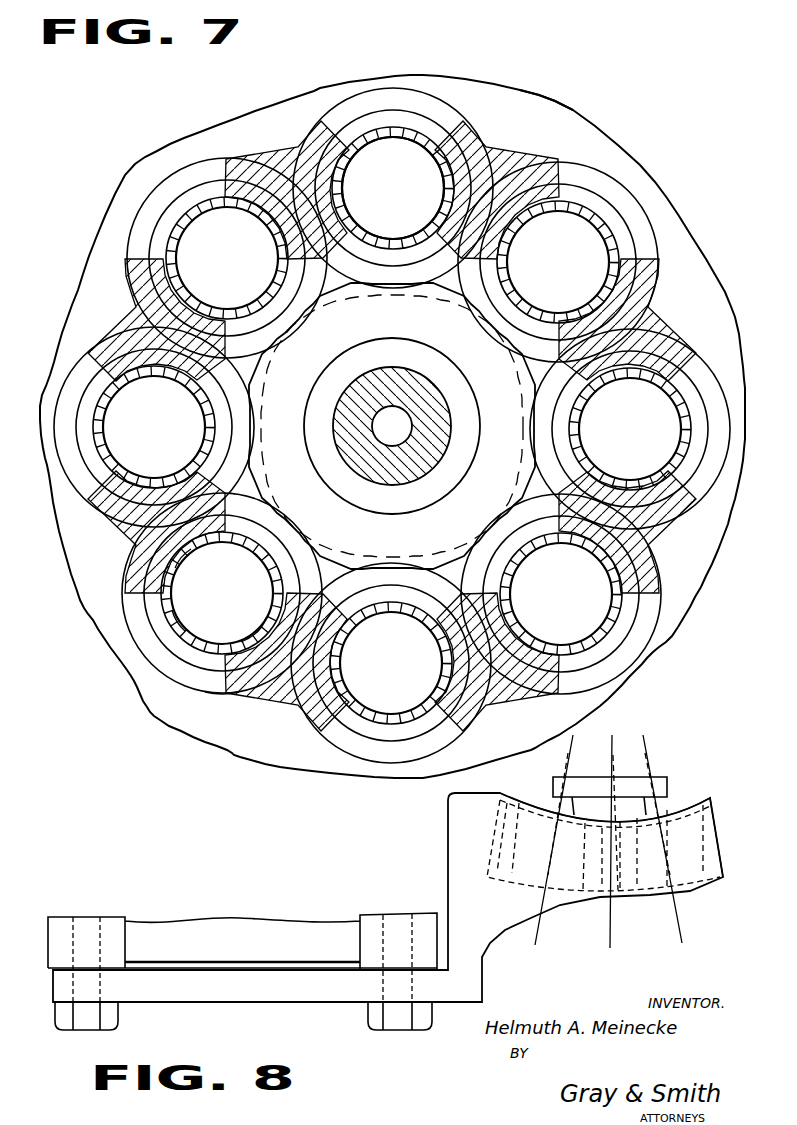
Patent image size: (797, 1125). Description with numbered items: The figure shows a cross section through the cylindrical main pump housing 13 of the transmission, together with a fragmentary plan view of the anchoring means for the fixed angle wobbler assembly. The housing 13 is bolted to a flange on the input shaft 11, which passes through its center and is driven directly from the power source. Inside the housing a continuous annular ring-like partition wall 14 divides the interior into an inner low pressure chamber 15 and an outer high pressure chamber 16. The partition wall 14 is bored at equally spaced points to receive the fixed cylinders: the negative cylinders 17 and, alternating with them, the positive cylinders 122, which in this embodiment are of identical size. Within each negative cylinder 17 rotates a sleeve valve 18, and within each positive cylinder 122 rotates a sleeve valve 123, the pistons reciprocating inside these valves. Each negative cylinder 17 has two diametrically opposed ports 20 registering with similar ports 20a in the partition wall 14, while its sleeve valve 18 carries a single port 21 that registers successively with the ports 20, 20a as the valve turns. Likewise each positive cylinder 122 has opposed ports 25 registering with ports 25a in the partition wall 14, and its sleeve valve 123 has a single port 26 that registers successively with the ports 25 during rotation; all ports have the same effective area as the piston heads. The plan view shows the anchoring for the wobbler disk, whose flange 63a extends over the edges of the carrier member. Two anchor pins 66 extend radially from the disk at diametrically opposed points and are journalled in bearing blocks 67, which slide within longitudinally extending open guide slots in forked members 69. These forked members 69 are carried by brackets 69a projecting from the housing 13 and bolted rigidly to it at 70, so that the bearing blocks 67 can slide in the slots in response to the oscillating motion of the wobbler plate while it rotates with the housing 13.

In FIG. 7, the input shaft 11 is at (433, 403).
In FIG. 7, the main pump housing 13 is at (268, 99).
In FIG. 8, the main pump housing 13 is at (313, 917).
In FIG. 7, the partition wall 14 is at (272, 163).
In FIG. 7, the low pressure chamber 15 is at (327, 282).
In FIG. 7, the high pressure chamber 16 is at (538, 116).
In FIG. 7, the negative cylinder 17 is at (452, 150).
In FIG. 7, the sleeve valve 18 is at (103, 427).
In FIG. 7, the port 20 is at (450, 134).
In FIG. 7, the partition wall port 20a is at (365, 100).
In FIG. 7, the sleeve valve port 21 is at (343, 190).
In FIG. 7, the port 25 is at (267, 540).
In FIG. 7, the partition wall port 25a is at (202, 684).
In FIG. 7, the sleeve valve port 26 is at (253, 628).
In FIG. 7, the positive cylinder 122 is at (178, 557).
In FIG. 7, the sleeve valve 123 is at (177, 623).
In FIG. 8, the flange 63a is at (668, 778).
In FIG. 8, the anchor pin 66 is at (647, 897).
In FIG. 8, the bearing block 67 is at (722, 842).
In FIG. 8, the forked member 69 is at (707, 805).
In FIG. 8, the bracket 69a is at (467, 990).
In FIG. 8, the bolt 70 is at (82, 1025).